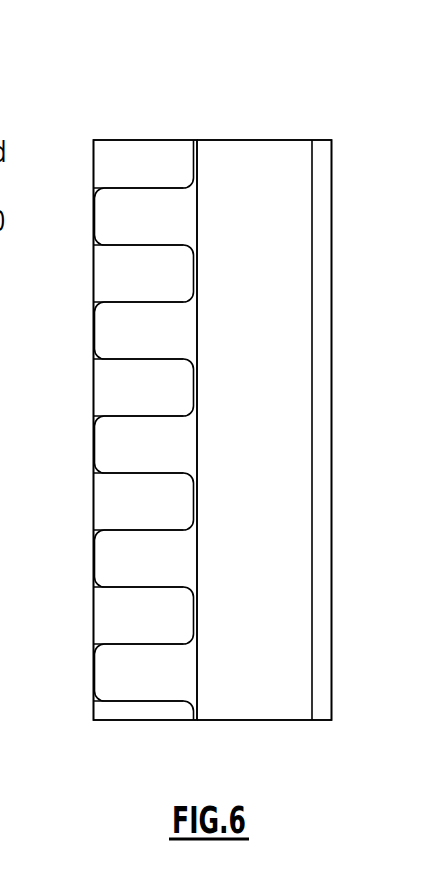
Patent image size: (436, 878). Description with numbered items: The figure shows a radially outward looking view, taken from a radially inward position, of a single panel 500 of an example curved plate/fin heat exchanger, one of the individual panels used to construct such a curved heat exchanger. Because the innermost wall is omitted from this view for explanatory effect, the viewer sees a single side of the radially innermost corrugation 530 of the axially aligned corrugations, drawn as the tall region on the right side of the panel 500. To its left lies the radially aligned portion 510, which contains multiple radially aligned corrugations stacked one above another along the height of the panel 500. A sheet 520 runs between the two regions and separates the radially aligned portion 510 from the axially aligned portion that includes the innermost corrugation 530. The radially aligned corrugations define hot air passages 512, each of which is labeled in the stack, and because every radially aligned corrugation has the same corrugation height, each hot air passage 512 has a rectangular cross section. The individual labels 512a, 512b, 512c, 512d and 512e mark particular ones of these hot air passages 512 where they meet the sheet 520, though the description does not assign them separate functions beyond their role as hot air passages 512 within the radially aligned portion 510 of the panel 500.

The panel 500 is at (129, 53).
The radially aligned portion 510 is at (100, 157).
The hot air passages 512 is at (144, 430).
The electrode cell junction 512a is at (173, 701).
The electrode cell junction 512b is at (173, 587).
The electrode cell junction 512c is at (173, 473).
The electrode cell junction 512d is at (173, 359).
The electrode cell junction 512e is at (173, 245).
The sheet 520 is at (197, 207).
The radially innermost corrugation 530 is at (295, 191).